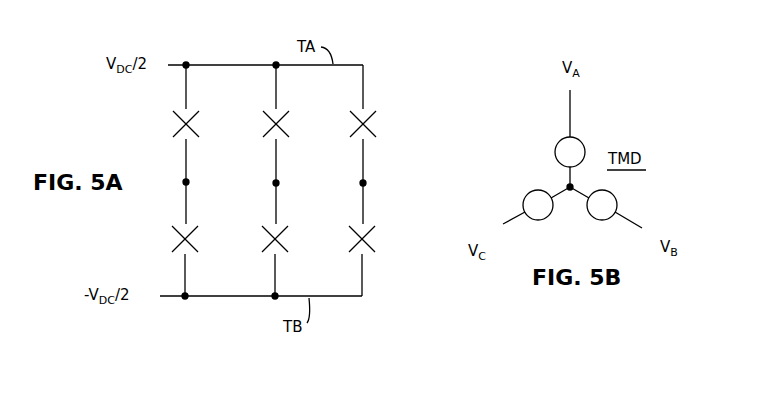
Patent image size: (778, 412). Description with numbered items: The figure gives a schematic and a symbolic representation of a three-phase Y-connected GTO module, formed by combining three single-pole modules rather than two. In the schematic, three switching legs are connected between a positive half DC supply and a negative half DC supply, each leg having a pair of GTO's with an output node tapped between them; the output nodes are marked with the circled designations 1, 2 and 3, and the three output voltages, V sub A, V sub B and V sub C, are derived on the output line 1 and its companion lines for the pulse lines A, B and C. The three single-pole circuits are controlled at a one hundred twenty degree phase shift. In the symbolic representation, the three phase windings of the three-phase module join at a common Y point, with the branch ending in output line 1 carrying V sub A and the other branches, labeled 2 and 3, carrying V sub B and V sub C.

In FIG. 5A, the output line 1 is at (186, 182).
In FIG. 5B, the output line 1 is at (571, 138).
In FIG. 5A, the phase B switching leg / winding 2 is at (276, 183).
In FIG. 5B, the phase B switching leg / winding 2 is at (610, 214).
In FIG. 5A, the phase C switching leg / winding 3 is at (363, 183).
In FIG. 5B, the phase C switching leg / winding 3 is at (531, 213).